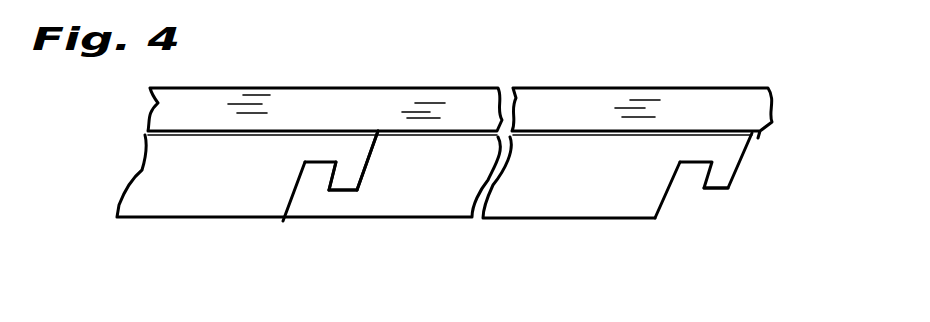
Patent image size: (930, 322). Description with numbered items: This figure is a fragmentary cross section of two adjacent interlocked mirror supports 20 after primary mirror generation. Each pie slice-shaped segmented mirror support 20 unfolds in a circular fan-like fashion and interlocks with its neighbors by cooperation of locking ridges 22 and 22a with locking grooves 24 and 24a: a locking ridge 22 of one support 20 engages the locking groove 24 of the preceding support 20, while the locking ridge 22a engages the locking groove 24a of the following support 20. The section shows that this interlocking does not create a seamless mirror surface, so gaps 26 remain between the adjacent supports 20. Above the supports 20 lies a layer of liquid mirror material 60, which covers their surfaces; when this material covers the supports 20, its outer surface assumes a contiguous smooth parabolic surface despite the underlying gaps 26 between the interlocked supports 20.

The mirror support 20 is at (386, 176).
The locking ridge 22 is at (348, 172).
The locking ridge 22a is at (310, 182).
The locking groove 24 is at (343, 208).
The locking groove 24a is at (698, 174).
The gap 26 is at (382, 126).
The liquid mirror material 60 is at (353, 120).